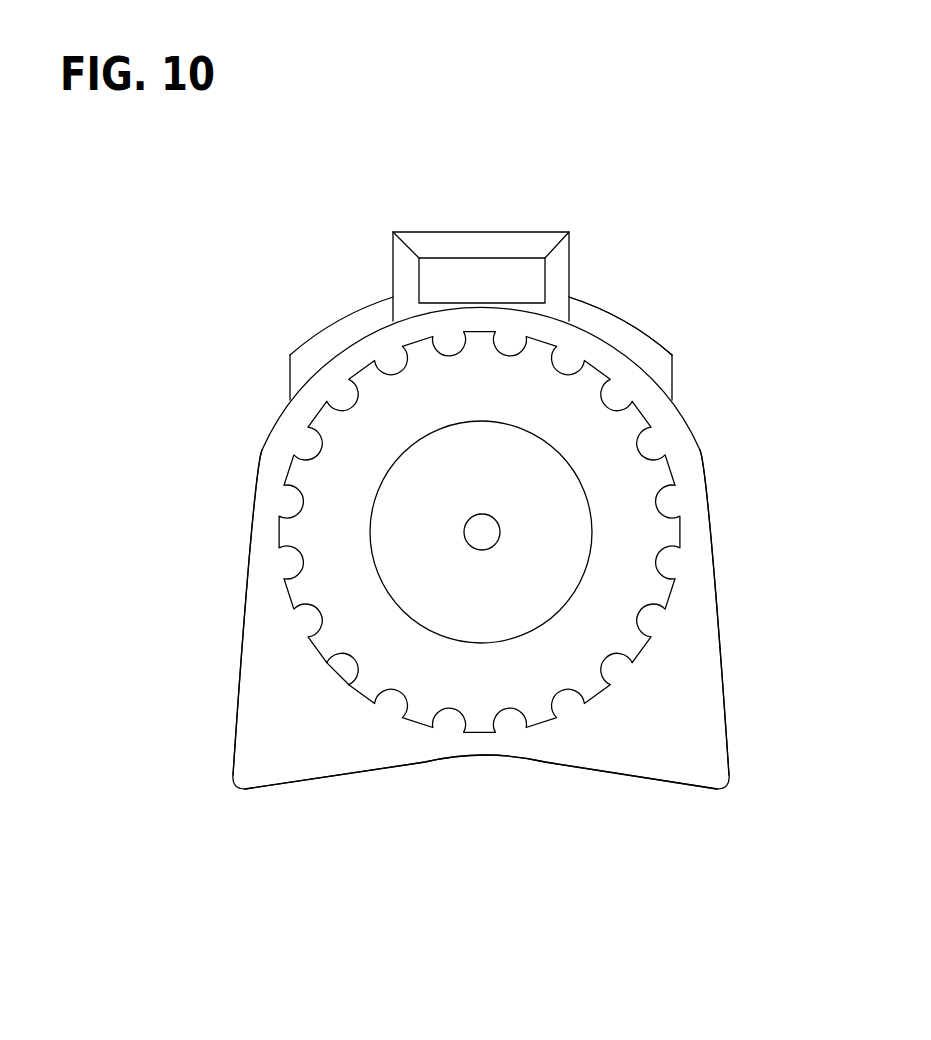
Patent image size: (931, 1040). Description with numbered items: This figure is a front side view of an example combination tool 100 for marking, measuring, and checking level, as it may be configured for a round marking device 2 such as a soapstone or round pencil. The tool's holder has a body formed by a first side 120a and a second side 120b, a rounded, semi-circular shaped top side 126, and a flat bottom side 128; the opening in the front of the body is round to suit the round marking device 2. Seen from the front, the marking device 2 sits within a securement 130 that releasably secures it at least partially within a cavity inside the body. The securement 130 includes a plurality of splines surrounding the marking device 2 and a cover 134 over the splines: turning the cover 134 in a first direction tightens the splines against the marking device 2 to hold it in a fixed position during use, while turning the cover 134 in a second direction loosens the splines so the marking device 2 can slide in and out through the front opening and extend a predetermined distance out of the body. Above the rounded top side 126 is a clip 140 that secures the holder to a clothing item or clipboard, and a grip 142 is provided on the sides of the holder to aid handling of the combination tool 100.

The combination tool 100 is at (253, 352).
The marking device 2 is at (385, 585).
The first side 120a is at (710, 522).
The second side 120b is at (247, 517).
The top side 126 is at (381, 327).
The bottom side 128 is at (512, 757).
The securement 130 is at (280, 535).
The cover 134 is at (335, 672).
The clip 140 is at (538, 237).
The grip 142 is at (659, 346).